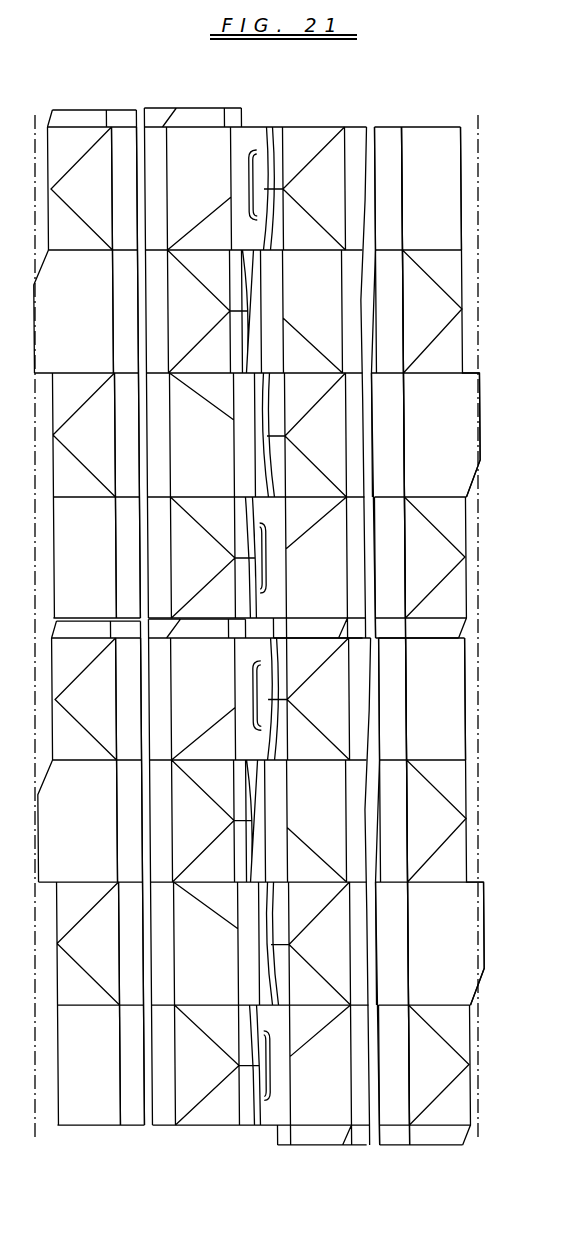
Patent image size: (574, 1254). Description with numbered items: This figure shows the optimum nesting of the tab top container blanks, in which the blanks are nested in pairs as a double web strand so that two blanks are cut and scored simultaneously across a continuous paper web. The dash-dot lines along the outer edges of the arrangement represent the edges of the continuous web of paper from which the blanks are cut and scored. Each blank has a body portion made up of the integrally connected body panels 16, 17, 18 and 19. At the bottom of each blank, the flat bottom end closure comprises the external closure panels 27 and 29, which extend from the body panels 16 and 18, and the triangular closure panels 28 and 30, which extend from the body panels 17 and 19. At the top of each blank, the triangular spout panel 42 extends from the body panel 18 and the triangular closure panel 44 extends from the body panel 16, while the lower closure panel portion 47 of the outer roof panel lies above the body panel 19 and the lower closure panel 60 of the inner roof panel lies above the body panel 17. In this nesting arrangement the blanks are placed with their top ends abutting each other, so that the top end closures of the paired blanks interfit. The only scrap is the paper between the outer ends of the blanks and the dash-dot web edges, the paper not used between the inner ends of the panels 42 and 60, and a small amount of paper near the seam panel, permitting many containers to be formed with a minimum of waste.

The body panel 16 is at (118, 573).
The body panel 17 is at (118, 456).
The body panel 18 is at (113, 330).
The body panel 19 is at (116, 204).
The external closure panel 27 is at (71, 576).
The triangular closure panel 28 is at (81, 455).
The external closure panel 29 is at (56, 331).
The triangular closure panel 30 is at (76, 203).
The triangular spout panel 42 is at (180, 325).
The triangular closure panel 44 is at (186, 573).
The lower closure panel portion 47 is at (183, 185).
The lower closure panel 60 is at (191, 461).